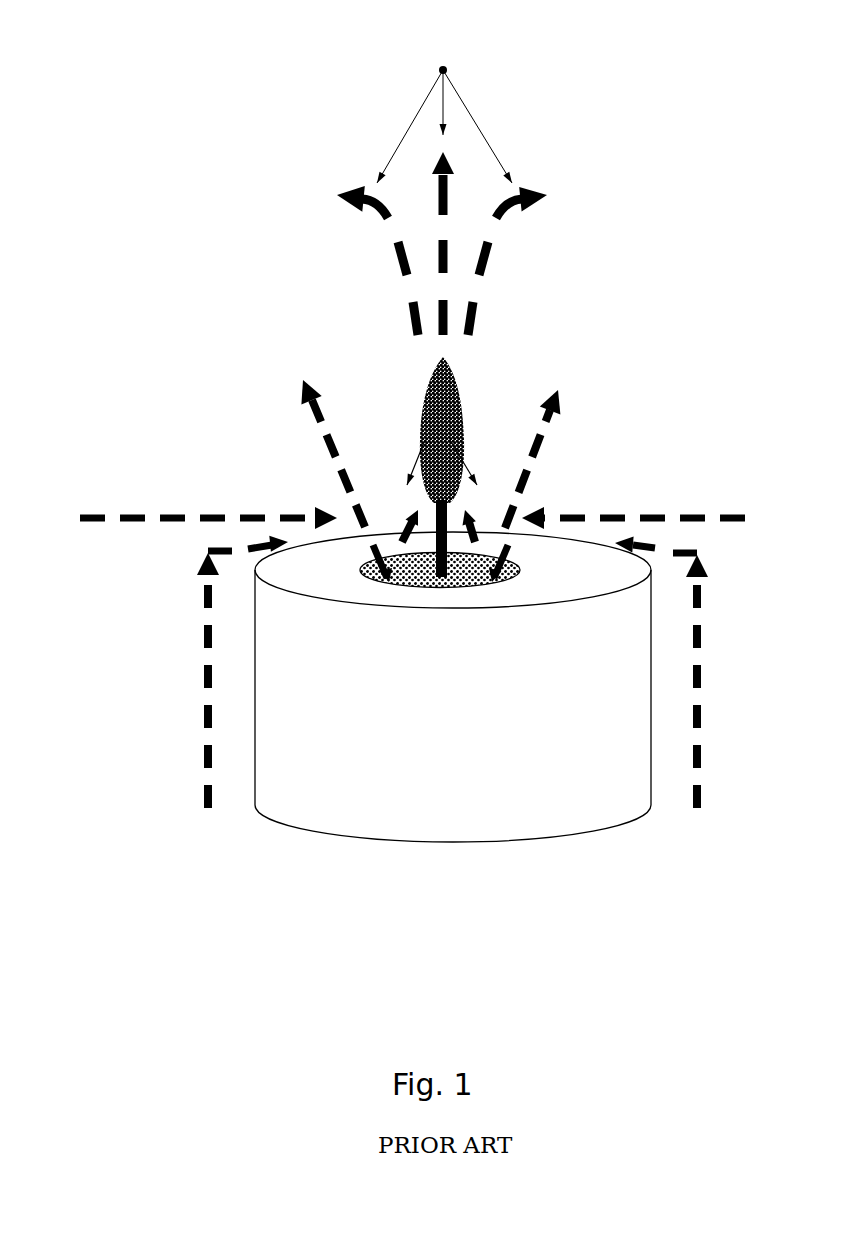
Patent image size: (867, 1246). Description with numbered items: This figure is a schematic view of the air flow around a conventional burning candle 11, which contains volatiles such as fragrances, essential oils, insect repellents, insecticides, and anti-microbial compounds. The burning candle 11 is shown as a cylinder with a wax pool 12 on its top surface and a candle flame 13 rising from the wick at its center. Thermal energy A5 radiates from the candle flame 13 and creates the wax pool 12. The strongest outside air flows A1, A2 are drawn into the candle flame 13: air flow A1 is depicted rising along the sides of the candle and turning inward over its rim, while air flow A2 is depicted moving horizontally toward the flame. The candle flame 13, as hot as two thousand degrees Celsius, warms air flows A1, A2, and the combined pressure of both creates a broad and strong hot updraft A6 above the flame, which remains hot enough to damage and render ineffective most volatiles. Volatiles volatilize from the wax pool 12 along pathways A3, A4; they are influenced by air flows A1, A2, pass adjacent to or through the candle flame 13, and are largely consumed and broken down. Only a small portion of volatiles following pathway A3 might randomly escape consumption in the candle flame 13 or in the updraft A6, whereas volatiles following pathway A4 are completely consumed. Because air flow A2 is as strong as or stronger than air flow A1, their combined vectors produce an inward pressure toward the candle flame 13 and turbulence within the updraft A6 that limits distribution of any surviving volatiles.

The burning candle 11 is at (538, 838).
The wax pool 12 is at (502, 578).
The candle flame 13 is at (467, 402).
The outside air flow A1 is at (195, 752).
The outside air flow A2 is at (138, 507).
The pathway A3 is at (290, 390).
The pathway A4 is at (392, 527).
The thermal energy A5 is at (405, 468).
The updraft A6 is at (442, 122).